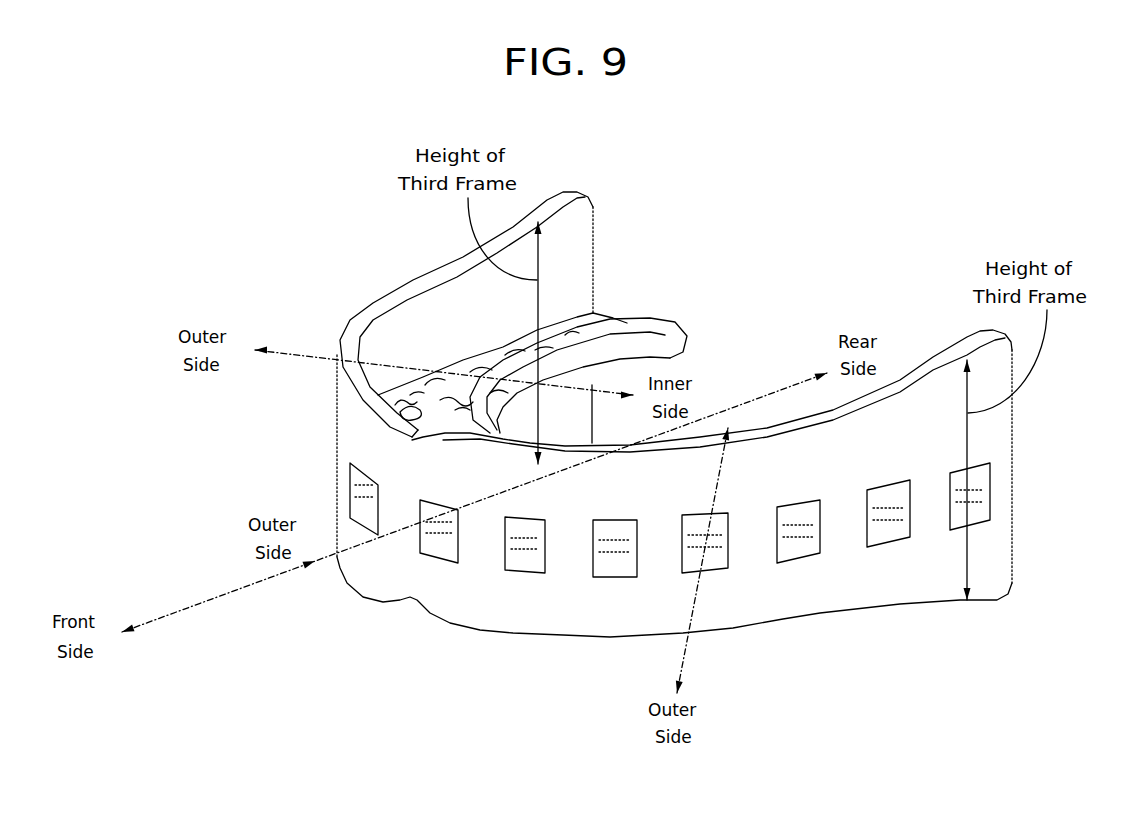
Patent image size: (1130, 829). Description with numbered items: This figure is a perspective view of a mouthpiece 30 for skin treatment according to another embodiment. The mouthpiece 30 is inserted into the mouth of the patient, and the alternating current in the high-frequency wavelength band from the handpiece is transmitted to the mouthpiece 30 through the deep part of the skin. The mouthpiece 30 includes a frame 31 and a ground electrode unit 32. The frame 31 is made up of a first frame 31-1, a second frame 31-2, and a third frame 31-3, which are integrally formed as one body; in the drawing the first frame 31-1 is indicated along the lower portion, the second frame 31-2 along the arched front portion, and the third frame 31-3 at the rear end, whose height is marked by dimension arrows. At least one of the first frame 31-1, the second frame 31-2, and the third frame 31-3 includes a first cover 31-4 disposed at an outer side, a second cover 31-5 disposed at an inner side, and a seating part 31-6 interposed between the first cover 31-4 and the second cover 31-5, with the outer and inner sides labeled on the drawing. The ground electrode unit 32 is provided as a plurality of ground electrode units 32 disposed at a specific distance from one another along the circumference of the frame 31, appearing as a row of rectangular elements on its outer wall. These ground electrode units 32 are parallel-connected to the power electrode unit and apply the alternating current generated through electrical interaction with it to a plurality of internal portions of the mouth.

The mouthpiece 30 is at (1009, 151).
The frame 31 is at (575, 696).
The first frame 31-1 is at (487, 662).
The second frame 31-2 is at (369, 261).
The third frame 31-3 is at (908, 632).
The first cover 31-4 is at (355, 409).
The second cover 31-5 is at (675, 352).
The seating part 31-6 is at (597, 323).
The ground electrode unit 32 is at (433, 545).